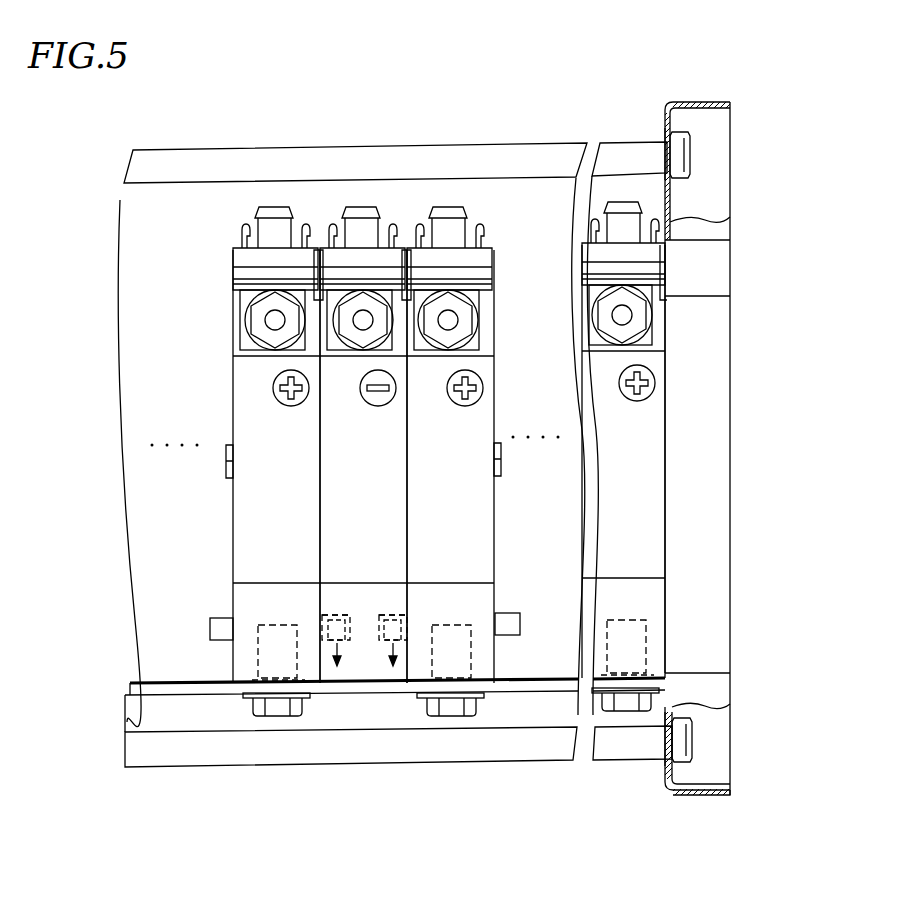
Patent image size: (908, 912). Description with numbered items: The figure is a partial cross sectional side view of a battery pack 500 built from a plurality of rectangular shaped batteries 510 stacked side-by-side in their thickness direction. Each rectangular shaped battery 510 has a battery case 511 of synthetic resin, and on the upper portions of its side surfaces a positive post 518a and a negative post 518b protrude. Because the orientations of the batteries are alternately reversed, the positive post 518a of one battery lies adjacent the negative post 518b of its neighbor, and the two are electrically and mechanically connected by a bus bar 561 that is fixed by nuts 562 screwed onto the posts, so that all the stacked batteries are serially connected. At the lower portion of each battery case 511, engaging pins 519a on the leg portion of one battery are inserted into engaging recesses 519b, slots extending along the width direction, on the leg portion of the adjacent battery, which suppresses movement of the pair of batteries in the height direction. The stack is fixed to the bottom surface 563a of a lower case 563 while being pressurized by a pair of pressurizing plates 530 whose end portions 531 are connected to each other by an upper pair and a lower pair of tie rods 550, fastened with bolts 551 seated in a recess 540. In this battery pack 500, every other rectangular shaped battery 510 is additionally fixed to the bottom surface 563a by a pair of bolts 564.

The battery pack 500 is at (775, 44).
The rectangular shaped battery 510 is at (227, 256).
The battery case 511 is at (248, 667).
The positive post 518a is at (620, 310).
The negative post 518b is at (360, 317).
The engaging pin 519a is at (330, 617).
The engaging recess 519b is at (350, 615).
The pressurizing plate 530 is at (670, 103).
The end portion 531 is at (663, 138).
The recess 540 is at (707, 132).
The tie rod 550 is at (387, 157).
The bolt 551 is at (683, 158).
The bus bar 561 is at (240, 343).
The nut 562 is at (257, 310).
The lower case 563 is at (348, 705).
The bottom surface 563a is at (185, 695).
The bolt 564 is at (275, 716).